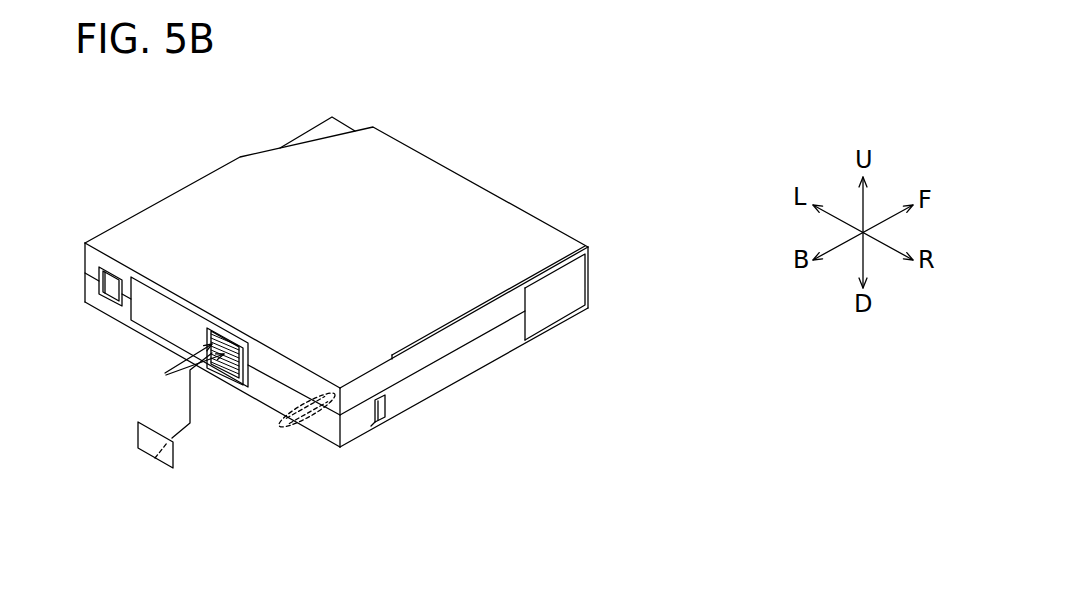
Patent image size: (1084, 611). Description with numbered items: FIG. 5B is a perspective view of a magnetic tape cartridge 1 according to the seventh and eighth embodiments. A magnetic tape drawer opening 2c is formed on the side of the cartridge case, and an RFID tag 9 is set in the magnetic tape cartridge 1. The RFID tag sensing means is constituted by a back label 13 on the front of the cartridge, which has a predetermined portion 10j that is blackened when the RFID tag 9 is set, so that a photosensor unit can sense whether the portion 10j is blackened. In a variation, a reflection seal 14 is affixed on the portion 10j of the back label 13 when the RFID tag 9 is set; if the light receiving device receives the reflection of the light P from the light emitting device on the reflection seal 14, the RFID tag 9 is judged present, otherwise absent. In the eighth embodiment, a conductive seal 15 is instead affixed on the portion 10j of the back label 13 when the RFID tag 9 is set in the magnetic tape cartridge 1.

The magnetic tape cartridge 1 is at (455, 129).
The back label 13 is at (157, 308).
The portion of the back label 10j is at (227, 373).
The light P is at (149, 366).
The reflection seal 14 is at (254, 462).
The conductive seal 15 is at (148, 457).
The RFID tag 9 is at (298, 412).
The magnetic tape drawer opening 2c is at (552, 288).